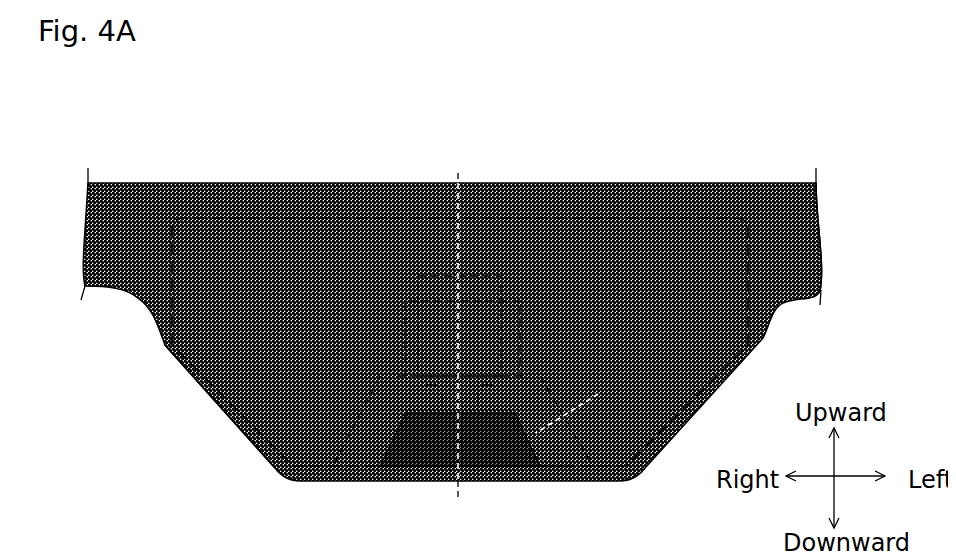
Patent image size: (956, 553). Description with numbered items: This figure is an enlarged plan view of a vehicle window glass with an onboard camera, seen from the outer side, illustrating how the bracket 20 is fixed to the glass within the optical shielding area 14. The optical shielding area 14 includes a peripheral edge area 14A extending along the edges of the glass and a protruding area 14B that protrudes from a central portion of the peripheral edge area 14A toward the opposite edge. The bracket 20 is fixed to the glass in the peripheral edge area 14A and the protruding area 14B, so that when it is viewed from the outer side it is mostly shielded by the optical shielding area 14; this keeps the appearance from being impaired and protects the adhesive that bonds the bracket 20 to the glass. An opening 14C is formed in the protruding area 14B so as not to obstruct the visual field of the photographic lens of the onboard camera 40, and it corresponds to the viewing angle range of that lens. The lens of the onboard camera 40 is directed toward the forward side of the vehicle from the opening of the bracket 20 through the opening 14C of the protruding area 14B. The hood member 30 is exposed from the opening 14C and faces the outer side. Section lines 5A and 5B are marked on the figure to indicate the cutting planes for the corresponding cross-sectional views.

The optical shielding area 14 is at (732, 132).
The peripheral edge area 14A is at (808, 233).
The protruding area 14B is at (215, 397).
The opening 14C is at (460, 439).
The bracket 20 is at (573, 220).
The hood member 30 is at (398, 453).
The onboard camera 40 is at (432, 280).
The section line 5A is at (523, 423).
The section line 5B is at (459, 335).